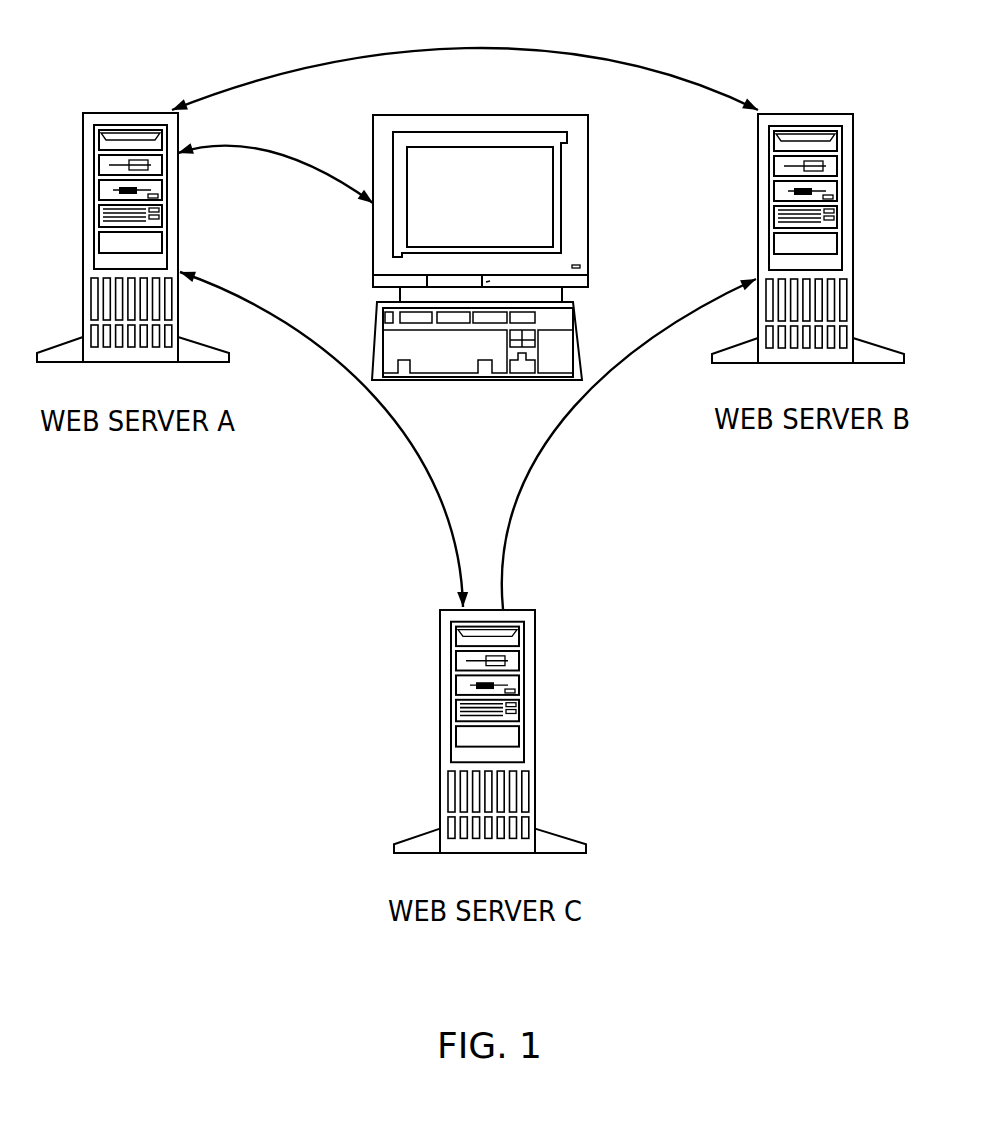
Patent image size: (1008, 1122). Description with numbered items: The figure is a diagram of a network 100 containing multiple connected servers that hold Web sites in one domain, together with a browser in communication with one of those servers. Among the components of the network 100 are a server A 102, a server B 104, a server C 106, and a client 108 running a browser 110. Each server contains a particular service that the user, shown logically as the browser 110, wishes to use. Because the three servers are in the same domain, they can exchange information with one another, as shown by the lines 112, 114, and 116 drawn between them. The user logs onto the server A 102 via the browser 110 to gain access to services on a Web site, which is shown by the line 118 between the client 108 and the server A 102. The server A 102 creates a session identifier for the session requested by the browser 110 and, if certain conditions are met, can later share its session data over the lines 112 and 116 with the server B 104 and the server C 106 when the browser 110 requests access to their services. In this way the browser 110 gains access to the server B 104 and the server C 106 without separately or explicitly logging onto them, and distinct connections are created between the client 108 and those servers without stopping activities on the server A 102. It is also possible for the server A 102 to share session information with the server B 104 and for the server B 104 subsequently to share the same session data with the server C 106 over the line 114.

The network 100 is at (213, 632).
The server A 102 is at (128, 112).
The server B 104 is at (803, 113).
The server C 106 is at (535, 627).
The client 108 is at (516, 247).
The browser 110 is at (480, 197).
The line 112 is at (495, 34).
The line 114 is at (546, 438).
The line 116 is at (404, 438).
The line 118 is at (324, 140).